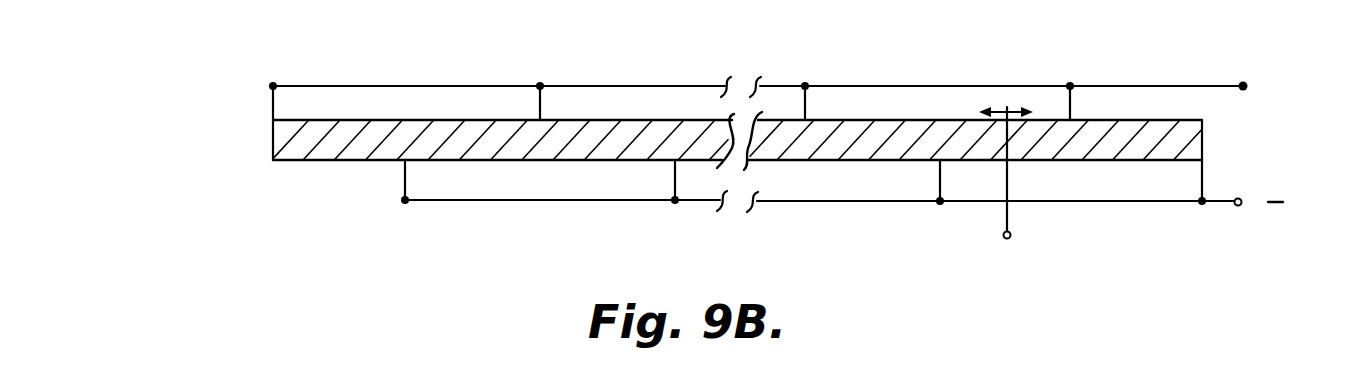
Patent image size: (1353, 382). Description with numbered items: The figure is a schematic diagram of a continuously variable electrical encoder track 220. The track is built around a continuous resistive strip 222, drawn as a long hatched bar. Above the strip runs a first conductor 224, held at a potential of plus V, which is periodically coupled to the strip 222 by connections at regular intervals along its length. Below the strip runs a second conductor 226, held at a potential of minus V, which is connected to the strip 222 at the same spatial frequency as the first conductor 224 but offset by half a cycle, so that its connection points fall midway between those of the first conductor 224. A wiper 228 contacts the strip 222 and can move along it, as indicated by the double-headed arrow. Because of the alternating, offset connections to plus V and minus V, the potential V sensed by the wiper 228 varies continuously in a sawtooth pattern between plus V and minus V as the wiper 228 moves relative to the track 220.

The continuously variable track 220 is at (247, 81).
The continuous resistive strip 222 is at (317, 161).
The first conductor 224 is at (364, 86).
The second conductor 226 is at (463, 201).
The wiper 228 is at (1003, 181).